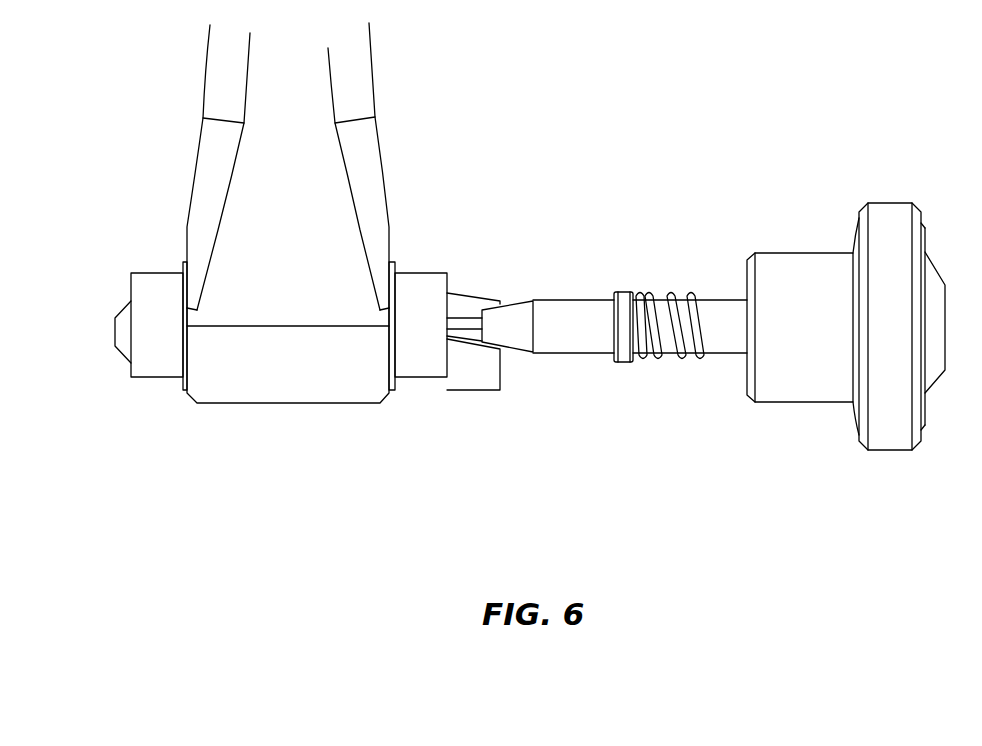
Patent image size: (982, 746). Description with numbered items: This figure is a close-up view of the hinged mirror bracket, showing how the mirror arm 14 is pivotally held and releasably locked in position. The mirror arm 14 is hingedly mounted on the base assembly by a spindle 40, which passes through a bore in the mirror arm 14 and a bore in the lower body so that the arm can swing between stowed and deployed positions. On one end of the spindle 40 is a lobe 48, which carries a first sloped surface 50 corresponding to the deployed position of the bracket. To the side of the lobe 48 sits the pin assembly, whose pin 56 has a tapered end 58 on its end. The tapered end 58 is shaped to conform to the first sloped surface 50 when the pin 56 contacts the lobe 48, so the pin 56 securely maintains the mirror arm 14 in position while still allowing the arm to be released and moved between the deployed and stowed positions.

The mirror arm 14 is at (372, 82).
The spindle 40 is at (115, 323).
The lobe 48 is at (503, 372).
The first sloped surface 50 is at (464, 344).
The pin 56 is at (580, 300).
The tapered end 58 is at (512, 303).